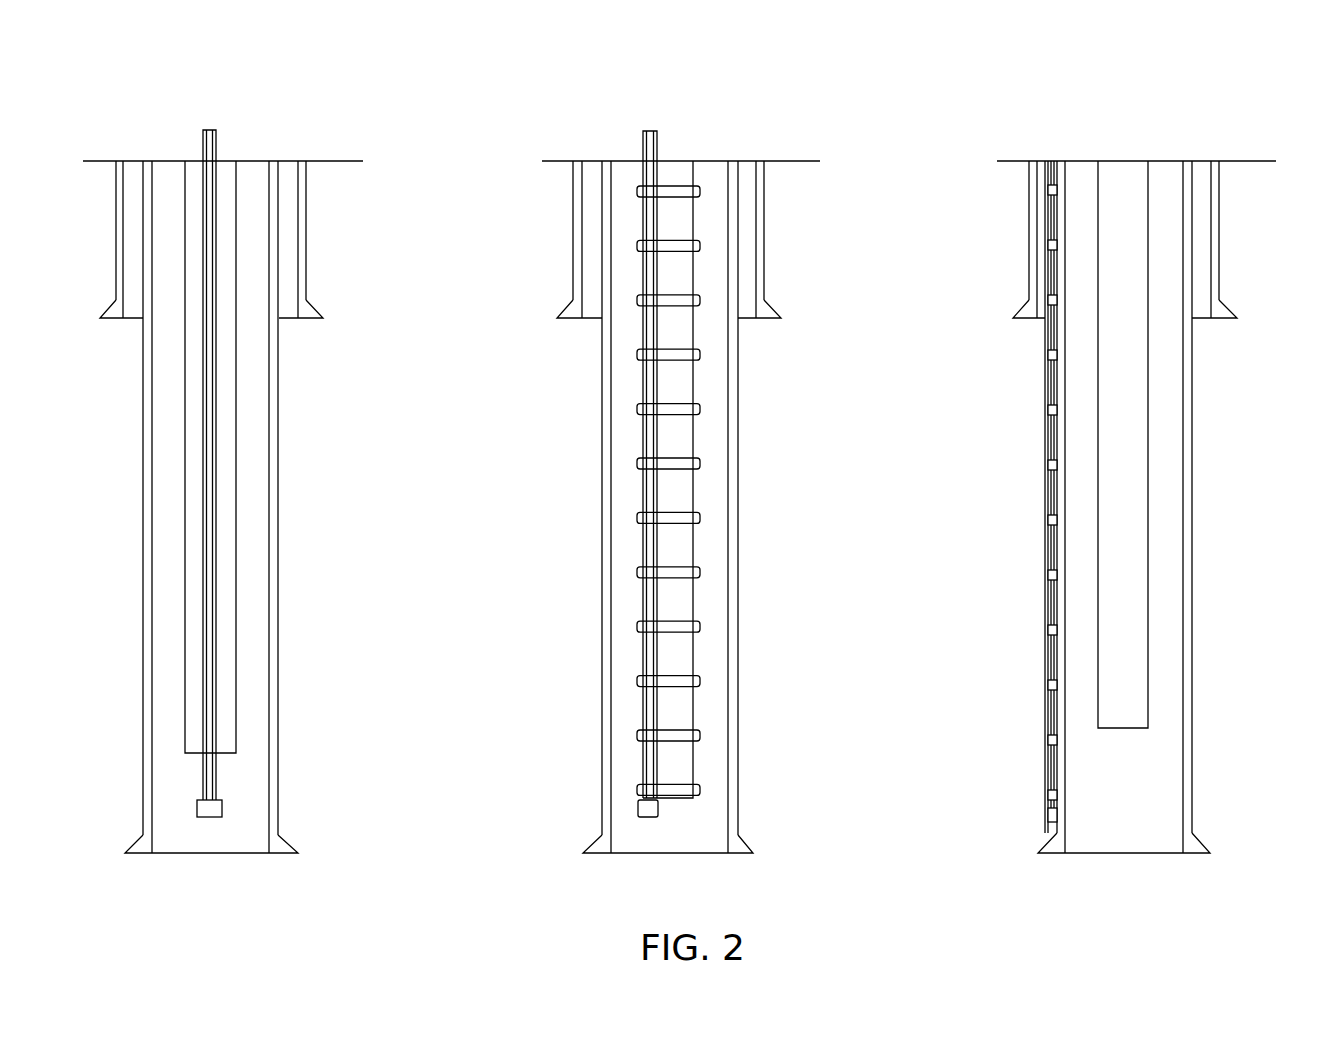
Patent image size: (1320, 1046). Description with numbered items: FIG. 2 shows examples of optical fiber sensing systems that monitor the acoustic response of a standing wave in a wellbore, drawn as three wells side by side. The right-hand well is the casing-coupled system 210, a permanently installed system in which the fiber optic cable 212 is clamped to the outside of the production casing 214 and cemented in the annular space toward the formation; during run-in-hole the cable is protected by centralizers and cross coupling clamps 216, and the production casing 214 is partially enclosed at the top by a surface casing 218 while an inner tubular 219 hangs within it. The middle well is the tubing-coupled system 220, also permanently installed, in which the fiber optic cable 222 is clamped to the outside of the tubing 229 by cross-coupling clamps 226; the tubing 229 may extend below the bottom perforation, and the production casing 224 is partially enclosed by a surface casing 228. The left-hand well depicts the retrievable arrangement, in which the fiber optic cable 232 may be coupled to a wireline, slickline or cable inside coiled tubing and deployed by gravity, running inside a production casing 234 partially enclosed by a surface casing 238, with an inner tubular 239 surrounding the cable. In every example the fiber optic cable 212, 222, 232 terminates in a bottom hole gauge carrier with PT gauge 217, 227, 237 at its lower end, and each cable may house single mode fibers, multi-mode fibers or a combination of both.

The tubing-coupled optical fiber sensing system 220 is at (383, 110).
The casing-coupled optical fiber sensing system 210 is at (1223, 110).
The surface casing 238 is at (314, 237).
The production casing 234 is at (287, 383).
The liner 239 is at (248, 670).
The fiber optic cable 232 is at (228, 525).
The bottom hole gauge carrier with PT gauge 237 is at (234, 808).
The surface casing 228 is at (778, 237).
The production casing 224 is at (750, 345).
The fiber optic cable 222 is at (706, 496).
The cross-coupling clamps 226 is at (714, 408).
The tubing 229 is at (706, 592).
The bottom hole gauge carrier with PT gauge 227 is at (674, 808).
The surface casing 218 is at (1233, 237).
The production casing 214 is at (1204, 358).
The fiber optic cable 212 is at (1070, 594).
The centralizers and cross coupling clamps 216 is at (1070, 463).
The bottom hole gauge carrier with PT gauge 217 is at (1077, 815).
The tubing 219 is at (1160, 708).